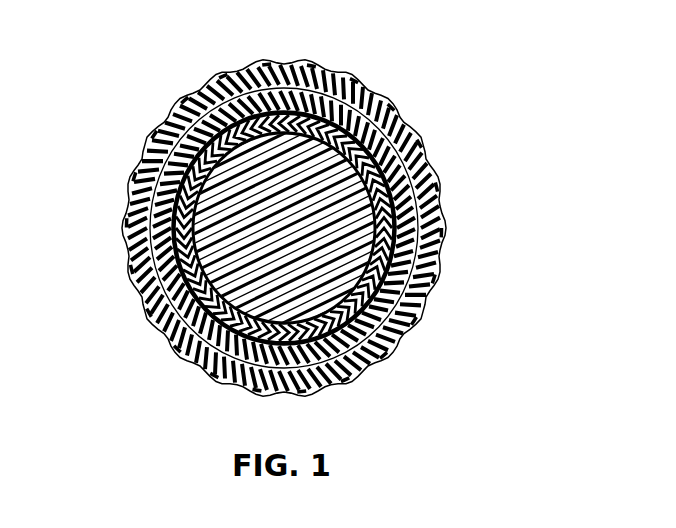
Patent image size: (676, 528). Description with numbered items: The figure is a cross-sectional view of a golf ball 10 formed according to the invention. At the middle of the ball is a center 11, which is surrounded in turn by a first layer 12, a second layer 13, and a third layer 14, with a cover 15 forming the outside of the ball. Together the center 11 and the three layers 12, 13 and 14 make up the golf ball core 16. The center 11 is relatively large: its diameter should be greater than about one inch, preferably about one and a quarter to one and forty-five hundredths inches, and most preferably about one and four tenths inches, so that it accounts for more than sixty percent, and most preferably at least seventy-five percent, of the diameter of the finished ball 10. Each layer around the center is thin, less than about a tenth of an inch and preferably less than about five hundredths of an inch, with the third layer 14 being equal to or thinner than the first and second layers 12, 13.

The golf ball 10 is at (424, 94).
The center 11 is at (322, 228).
The first layer 12 is at (358, 228).
The second layer 13 is at (332, 228).
The third layer 14 is at (136, 86).
The cover 15 is at (296, 234).
The golf ball core 16 is at (229, 227).